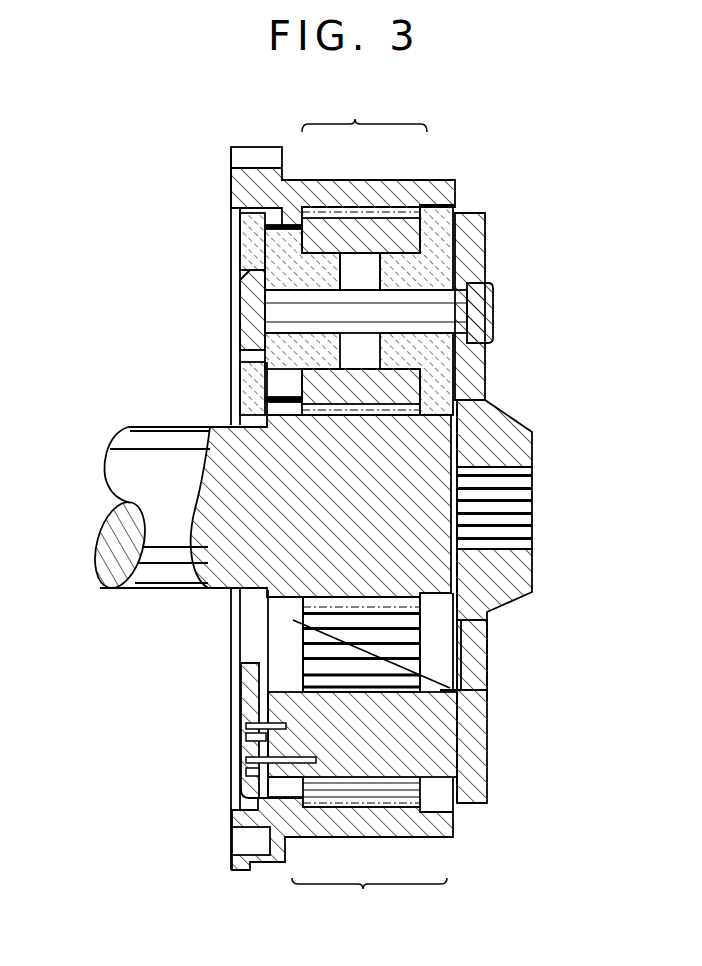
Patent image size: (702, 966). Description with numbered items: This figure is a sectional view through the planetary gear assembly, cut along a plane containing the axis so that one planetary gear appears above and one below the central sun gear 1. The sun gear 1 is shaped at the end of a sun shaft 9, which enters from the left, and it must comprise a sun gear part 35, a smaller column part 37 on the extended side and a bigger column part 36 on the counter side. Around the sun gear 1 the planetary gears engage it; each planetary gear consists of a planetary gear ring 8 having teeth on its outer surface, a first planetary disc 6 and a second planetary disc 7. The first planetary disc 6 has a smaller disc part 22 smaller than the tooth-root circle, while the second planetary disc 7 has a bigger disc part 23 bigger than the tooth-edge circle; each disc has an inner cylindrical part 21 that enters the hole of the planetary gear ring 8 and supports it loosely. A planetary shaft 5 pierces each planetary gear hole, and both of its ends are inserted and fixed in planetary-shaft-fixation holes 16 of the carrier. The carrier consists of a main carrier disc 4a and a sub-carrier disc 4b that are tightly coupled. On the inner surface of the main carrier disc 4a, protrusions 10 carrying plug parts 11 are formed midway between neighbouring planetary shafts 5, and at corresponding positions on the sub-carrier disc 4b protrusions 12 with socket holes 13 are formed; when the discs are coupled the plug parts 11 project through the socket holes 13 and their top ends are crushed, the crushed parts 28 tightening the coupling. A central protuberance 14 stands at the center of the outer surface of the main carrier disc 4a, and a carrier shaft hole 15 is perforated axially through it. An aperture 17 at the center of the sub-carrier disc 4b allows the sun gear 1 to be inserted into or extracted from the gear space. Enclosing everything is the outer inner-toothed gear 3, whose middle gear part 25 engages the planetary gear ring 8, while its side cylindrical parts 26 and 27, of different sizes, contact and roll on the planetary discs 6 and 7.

The sun gear 1 is at (325, 503).
The outer inner-toothed gear 3 is at (355, 123).
The main carrier disc 4a is at (503, 437).
The sub-carrier disc 4b is at (250, 682).
The planetary shaft 5 is at (241, 308).
The first planetary disc 6 is at (240, 272).
The second planetary disc 7 is at (455, 248).
The planetary gear ring 8 is at (380, 240).
The sun shaft 9 is at (128, 488).
The protrusion 10 is at (487, 722).
The plug part 11 is at (262, 772).
The protrusion 12 is at (250, 724).
The socket hole 13 is at (250, 733).
The central protuberance 14 is at (497, 568).
The carrier shaft hole 15 is at (493, 495).
The planetary-shaft-fixation hole 16 is at (468, 294).
The aperture 17 is at (265, 390).
The inner cylindrical part 21 is at (393, 278).
The smaller disc part 22 is at (263, 388).
The bigger disc part 23 is at (440, 398).
The gear part 25 is at (367, 205).
The cylindrical part 26 is at (283, 227).
The cylindrical part 27 is at (424, 265).
The crushed part 28 is at (250, 767).
The sun gear part 35 is at (487, 643).
The bigger column part 36 is at (450, 688).
The smaller column part 37 is at (465, 628).